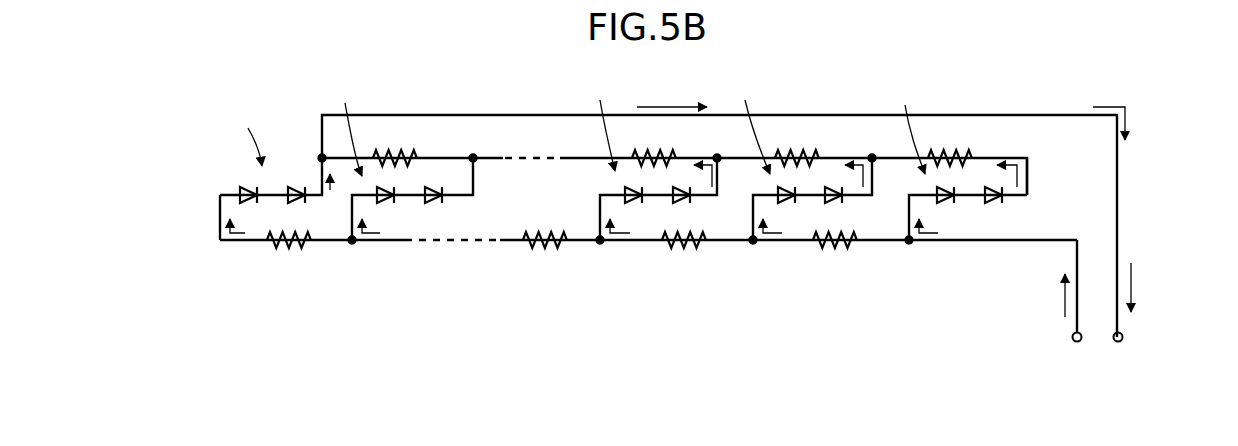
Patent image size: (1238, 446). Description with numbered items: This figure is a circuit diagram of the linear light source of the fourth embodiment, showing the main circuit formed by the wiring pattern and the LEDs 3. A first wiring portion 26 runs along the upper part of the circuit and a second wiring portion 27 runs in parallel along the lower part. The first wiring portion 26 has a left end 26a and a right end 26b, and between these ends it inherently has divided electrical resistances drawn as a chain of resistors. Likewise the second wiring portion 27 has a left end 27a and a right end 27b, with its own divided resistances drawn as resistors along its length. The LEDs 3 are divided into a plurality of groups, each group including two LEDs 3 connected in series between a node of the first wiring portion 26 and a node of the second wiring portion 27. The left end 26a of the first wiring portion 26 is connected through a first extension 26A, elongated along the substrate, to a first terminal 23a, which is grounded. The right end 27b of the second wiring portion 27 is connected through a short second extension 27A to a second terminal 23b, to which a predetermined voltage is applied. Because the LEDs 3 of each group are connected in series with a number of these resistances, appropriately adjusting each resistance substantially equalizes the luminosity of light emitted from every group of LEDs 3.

The LED 3 is at (282, 187).
The first terminal 23a is at (1123, 340).
The second terminal 23b is at (1072, 340).
The first wiring portion 26 is at (836, 157).
The first extension 26A is at (497, 115).
The left end 26a is at (321, 158).
The right end 26b is at (1027, 158).
The second wiring portion 27 is at (742, 242).
The second extension 27A is at (1012, 241).
The left end 27a is at (219, 240).
The right end 27b is at (909, 243).